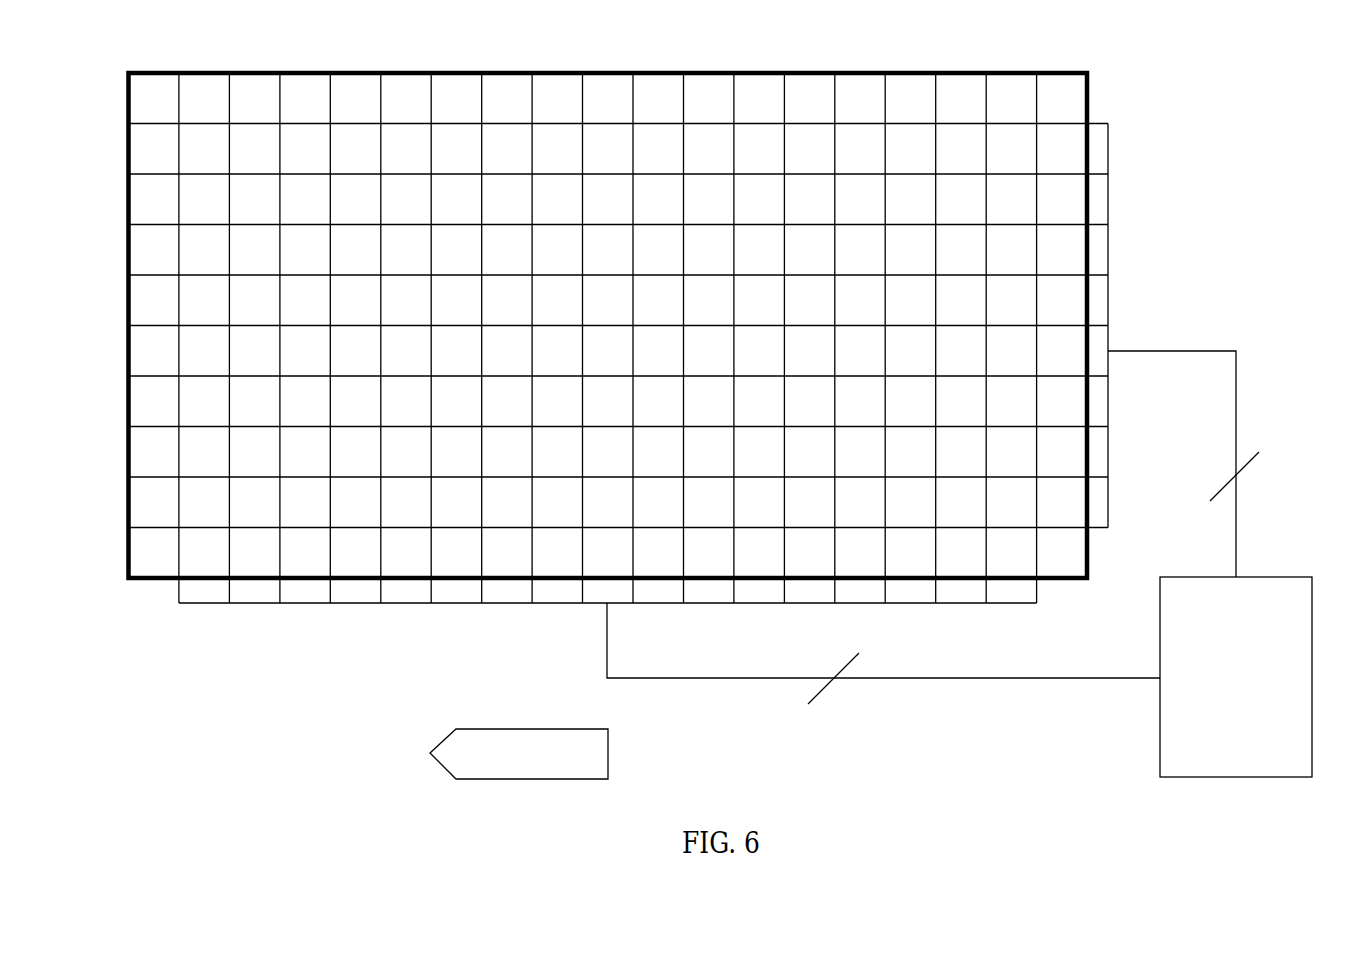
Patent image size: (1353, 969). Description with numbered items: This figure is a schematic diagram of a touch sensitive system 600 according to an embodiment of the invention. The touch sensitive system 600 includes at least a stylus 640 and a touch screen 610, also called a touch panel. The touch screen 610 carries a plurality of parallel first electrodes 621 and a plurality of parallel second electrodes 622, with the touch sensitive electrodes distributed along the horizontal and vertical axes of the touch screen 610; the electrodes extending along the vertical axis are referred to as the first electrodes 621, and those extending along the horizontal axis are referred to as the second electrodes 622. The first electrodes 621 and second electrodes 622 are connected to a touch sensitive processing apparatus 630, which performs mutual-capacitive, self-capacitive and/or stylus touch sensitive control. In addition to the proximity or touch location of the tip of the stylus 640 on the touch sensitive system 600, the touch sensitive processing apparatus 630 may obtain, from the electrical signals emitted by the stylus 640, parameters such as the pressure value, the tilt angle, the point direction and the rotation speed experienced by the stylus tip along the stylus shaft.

The touch sensitive system 600 is at (734, 422).
The touch screen 610 is at (153, 579).
The first electrodes 621 is at (1059, 273).
The second electrodes 622 is at (435, 553).
The touch sensitive processing apparatus 630 is at (1253, 688).
The stylus 640 is at (536, 765).